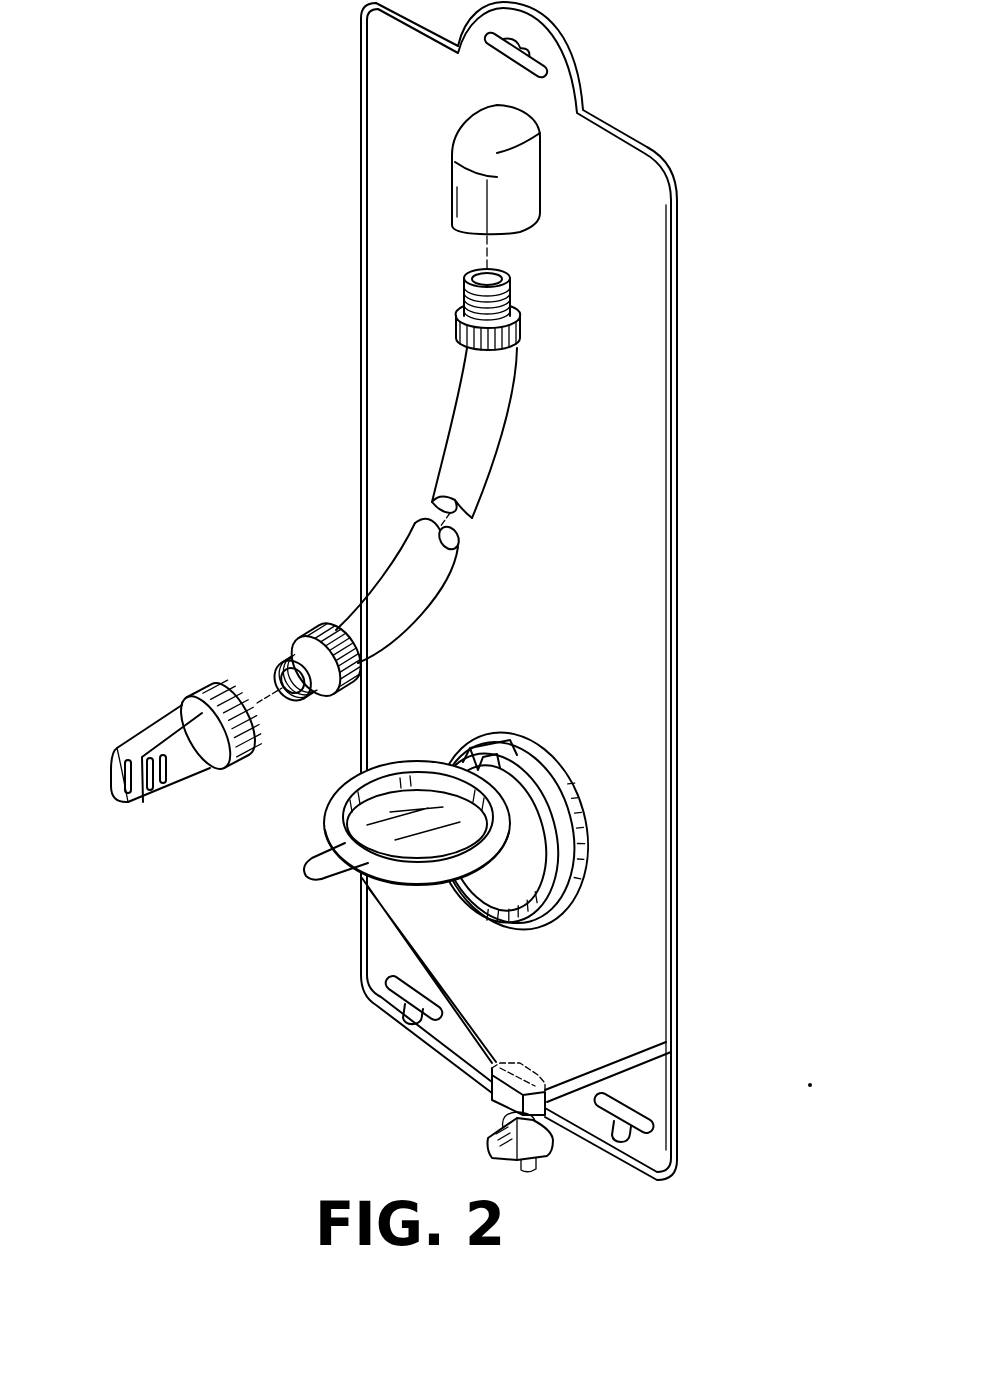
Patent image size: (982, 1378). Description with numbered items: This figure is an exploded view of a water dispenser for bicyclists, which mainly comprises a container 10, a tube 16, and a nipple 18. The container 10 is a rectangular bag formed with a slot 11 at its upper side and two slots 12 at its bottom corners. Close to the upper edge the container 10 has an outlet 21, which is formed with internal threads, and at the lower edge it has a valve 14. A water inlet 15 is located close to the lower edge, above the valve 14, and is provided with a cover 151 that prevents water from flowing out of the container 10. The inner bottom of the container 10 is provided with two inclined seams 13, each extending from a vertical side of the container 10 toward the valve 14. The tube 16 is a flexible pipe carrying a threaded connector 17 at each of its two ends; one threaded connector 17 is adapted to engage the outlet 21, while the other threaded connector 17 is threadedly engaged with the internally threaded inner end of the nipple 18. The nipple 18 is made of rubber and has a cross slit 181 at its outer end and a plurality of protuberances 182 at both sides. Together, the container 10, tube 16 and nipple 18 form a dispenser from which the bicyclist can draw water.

The container 10 is at (652, 582).
The slot 11 is at (513, 46).
The slots 12 is at (417, 1007).
The inclined seams 13 is at (432, 973).
The valve 14 is at (493, 1100).
The water inlet 15 is at (403, 830).
The cover 151 is at (332, 817).
The tube 16 is at (503, 447).
The threaded connector 17 is at (510, 297).
The nipple 18 is at (157, 758).
The cross slit 181 is at (120, 797).
The protuberances 182 is at (166, 788).
The outlet 21 is at (466, 132).